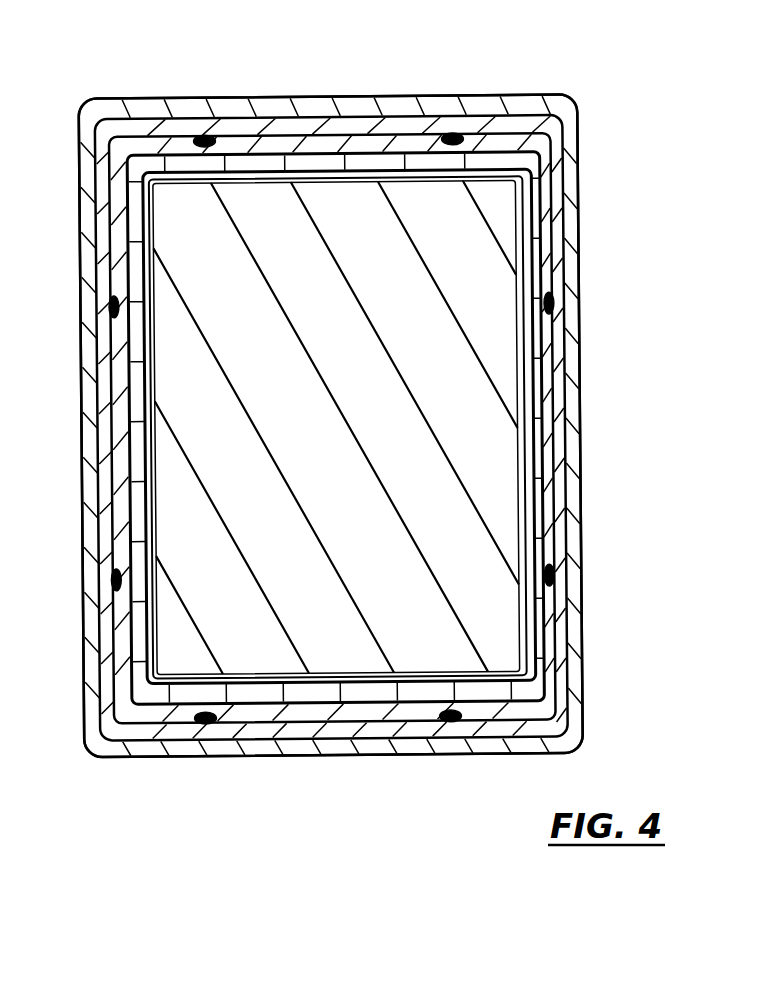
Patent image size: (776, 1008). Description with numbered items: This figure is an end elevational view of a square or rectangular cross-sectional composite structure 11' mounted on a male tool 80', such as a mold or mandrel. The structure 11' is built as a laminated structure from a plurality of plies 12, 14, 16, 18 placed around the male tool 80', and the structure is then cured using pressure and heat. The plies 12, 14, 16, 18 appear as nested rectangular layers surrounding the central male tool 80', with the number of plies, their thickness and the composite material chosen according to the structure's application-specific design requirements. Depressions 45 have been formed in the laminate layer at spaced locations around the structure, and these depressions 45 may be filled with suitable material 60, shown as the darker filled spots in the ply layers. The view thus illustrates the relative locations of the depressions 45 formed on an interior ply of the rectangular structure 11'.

The square or rectangular cross-sectional structure 11' is at (396, 392).
The ply 12 is at (535, 188).
The ply 14 is at (542, 245).
The ply 16 is at (557, 508).
The ply 18 is at (572, 623).
The depression 45 is at (552, 287).
The suitable material 60 is at (553, 306).
The male tool 80' is at (420, 427).